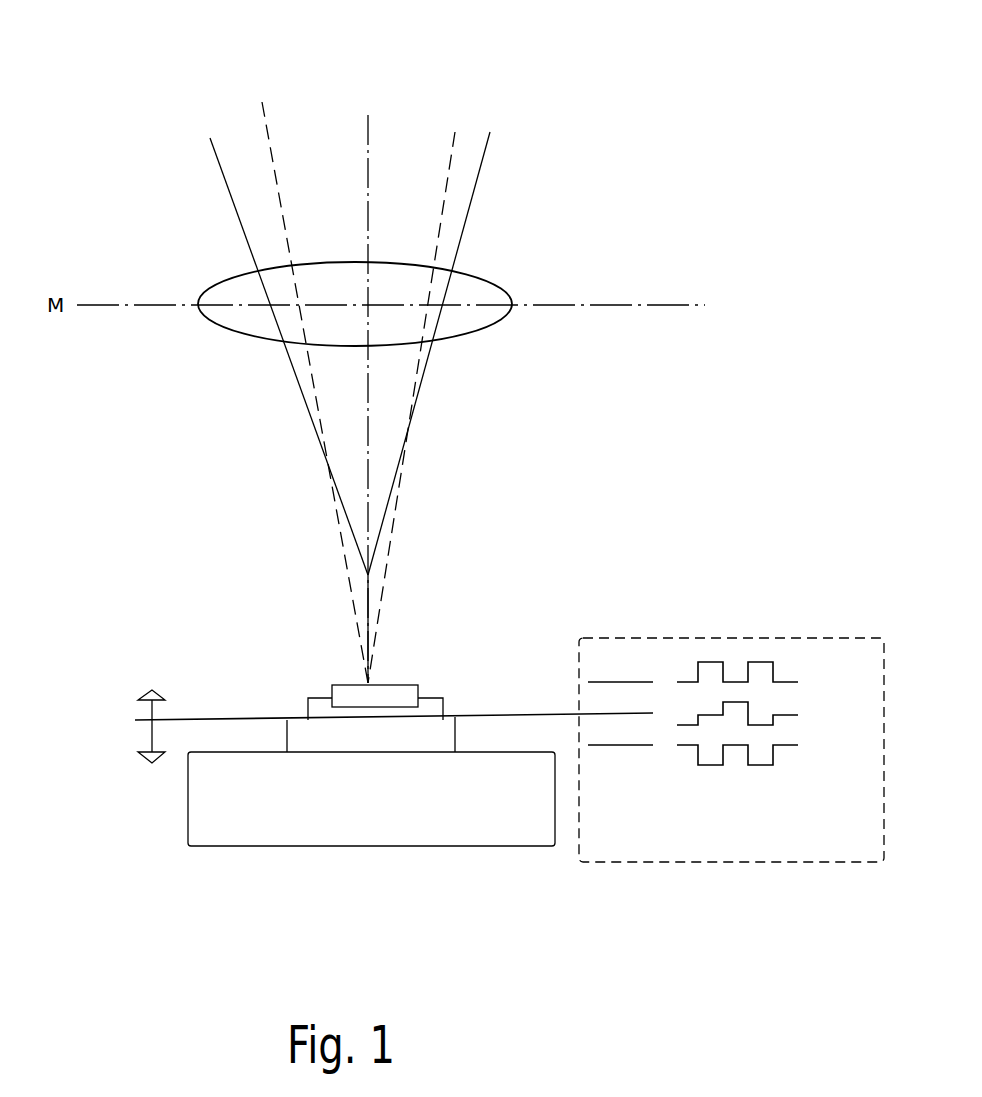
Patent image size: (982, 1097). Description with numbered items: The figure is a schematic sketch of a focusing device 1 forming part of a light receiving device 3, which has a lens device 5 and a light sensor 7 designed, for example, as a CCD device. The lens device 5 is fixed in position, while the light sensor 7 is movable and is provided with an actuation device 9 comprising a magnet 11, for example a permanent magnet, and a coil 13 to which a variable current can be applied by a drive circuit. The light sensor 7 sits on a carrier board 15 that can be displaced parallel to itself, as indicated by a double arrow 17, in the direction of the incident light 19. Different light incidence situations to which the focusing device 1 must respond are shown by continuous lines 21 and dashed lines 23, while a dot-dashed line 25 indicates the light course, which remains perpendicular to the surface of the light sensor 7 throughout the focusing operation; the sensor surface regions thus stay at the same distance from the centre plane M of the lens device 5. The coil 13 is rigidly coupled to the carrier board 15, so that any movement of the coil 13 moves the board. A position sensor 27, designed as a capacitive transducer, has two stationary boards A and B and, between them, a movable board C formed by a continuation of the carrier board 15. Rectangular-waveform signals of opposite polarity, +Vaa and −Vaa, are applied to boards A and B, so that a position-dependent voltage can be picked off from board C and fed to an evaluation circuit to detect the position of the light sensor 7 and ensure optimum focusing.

The focusing device 1 is at (520, 685).
The light receiving device 3 is at (237, 530).
The lens device 5 is at (213, 287).
The light sensor 7 is at (318, 660).
The actuation device 9 is at (165, 836).
The magnet 11 is at (238, 830).
The coil 13 is at (455, 725).
The carrier board 15 is at (218, 718).
The double arrow 17 is at (147, 707).
The incident light 19 is at (300, 436).
The continuous lines 21 is at (468, 208).
The dashed lines 23 is at (457, 150).
The dot-dashed line 25 is at (367, 152).
The position sensor 27 is at (828, 618).